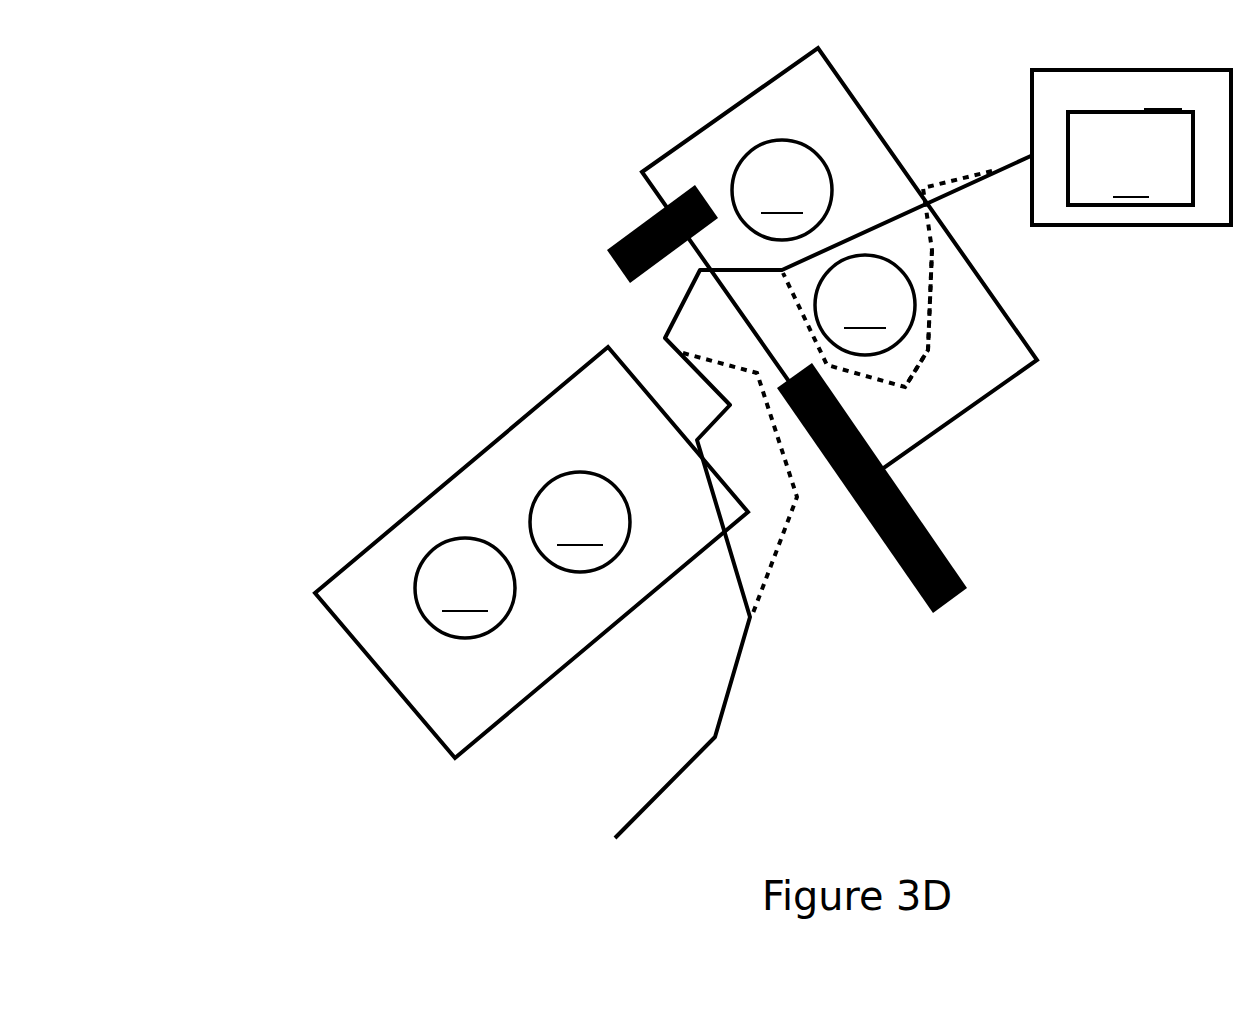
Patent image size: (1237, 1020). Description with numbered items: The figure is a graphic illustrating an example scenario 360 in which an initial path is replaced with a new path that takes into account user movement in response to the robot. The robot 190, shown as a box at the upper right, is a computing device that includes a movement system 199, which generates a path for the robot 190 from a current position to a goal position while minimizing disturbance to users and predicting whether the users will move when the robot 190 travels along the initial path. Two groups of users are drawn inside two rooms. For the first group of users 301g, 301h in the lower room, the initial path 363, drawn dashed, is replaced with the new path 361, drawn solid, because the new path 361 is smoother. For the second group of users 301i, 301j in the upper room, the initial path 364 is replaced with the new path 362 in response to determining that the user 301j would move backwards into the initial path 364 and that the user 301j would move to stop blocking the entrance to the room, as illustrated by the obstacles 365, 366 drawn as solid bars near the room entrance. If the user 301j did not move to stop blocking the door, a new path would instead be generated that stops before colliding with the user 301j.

The example scenario 360 is at (250, 107).
The new path 361 is at (693, 368).
The new path 362 is at (905, 210).
The initial path 363 is at (765, 582).
The initial path 364 is at (928, 352).
The obstacle 365 is at (620, 233).
The obstacle 366 is at (930, 532).
The robot 190 is at (1131, 147).
The movement system 199 is at (1130, 158).
The user 301j is at (782, 190).
The user 301i is at (865, 305).
The user 301h is at (580, 522).
The user 301g is at (465, 588).